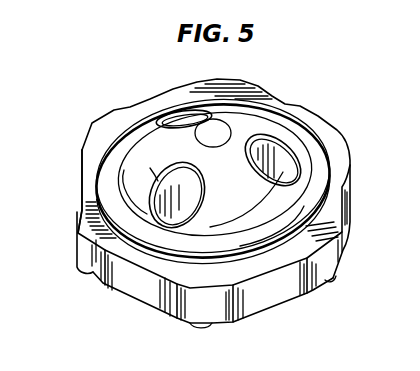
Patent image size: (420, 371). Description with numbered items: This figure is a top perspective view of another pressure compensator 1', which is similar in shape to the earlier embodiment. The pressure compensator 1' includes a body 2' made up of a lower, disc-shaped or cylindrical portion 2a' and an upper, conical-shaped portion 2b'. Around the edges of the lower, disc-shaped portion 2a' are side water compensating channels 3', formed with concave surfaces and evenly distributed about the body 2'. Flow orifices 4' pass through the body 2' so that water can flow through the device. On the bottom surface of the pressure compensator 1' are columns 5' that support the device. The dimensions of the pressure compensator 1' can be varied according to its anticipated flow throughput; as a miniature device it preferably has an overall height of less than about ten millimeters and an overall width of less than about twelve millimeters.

The pressure compensator 1' is at (224, 177).
The body 2' is at (236, 181).
The lower, disc-shaped portion 2a' is at (67, 211).
The upper, conical-shaped portion 2b' is at (200, 162).
The side water compensating channels 3' is at (217, 277).
The flow orifices 4' is at (224, 148).
The columns 5' is at (215, 339).